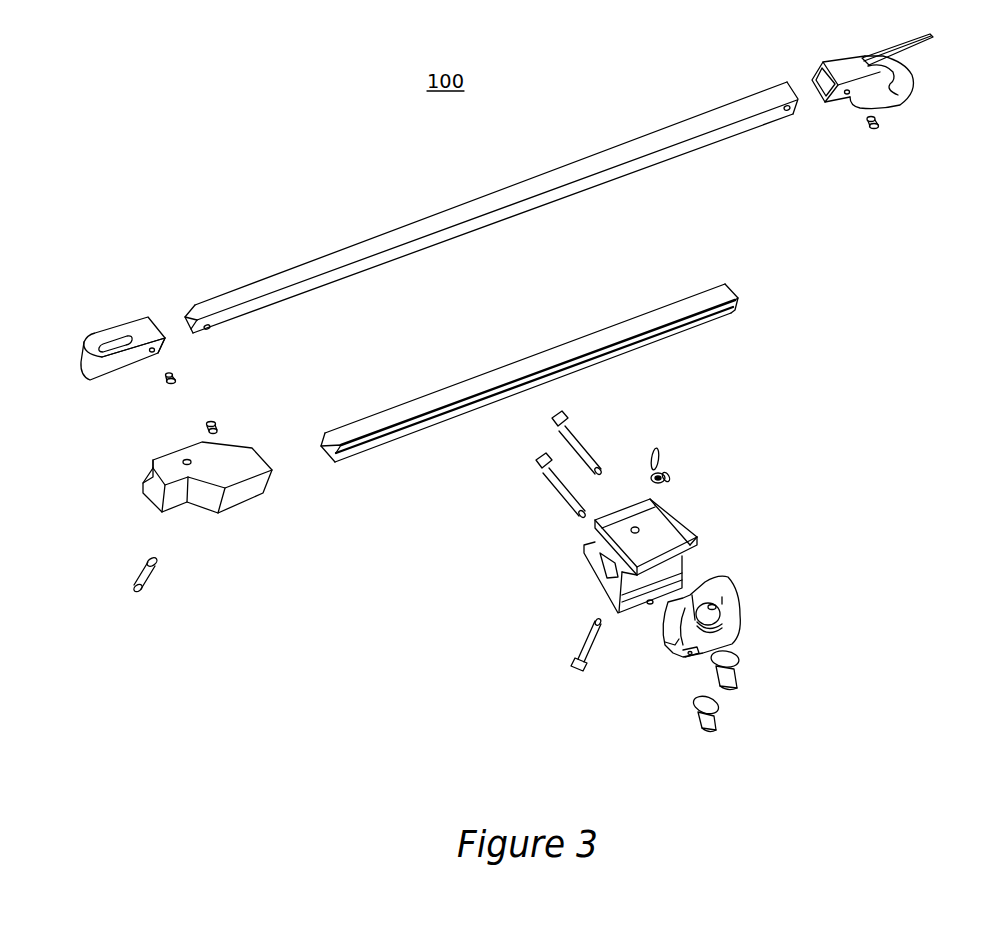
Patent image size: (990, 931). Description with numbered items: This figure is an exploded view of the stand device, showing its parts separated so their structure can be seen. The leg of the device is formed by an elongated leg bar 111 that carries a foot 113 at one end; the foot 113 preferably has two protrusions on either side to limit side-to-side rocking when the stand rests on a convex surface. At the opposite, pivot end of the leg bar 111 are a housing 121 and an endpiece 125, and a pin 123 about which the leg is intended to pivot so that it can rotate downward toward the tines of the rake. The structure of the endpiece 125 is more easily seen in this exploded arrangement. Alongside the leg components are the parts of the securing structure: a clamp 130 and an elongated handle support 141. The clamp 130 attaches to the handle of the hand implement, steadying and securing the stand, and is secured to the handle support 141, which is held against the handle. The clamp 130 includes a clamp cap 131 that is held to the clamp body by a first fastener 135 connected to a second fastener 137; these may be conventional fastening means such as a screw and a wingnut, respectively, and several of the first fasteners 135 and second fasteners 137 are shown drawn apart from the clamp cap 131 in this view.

The leg bar 111 is at (598, 187).
The foot 113 is at (892, 100).
The housing 121 is at (238, 507).
The pin 123 is at (143, 590).
The endpiece 125 is at (120, 327).
The clamp 130 is at (728, 540).
The clamp cap 131 is at (733, 625).
The first fastener 135 is at (563, 438).
The second fastener 137 is at (720, 708).
The handle support 141 is at (645, 350).